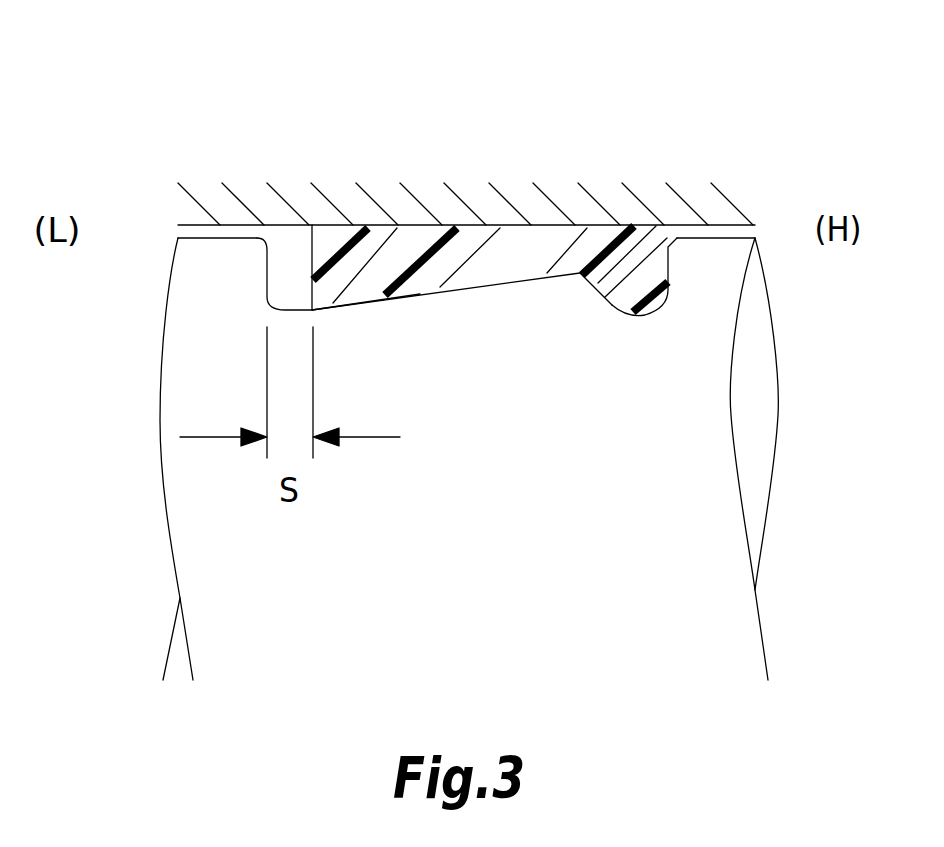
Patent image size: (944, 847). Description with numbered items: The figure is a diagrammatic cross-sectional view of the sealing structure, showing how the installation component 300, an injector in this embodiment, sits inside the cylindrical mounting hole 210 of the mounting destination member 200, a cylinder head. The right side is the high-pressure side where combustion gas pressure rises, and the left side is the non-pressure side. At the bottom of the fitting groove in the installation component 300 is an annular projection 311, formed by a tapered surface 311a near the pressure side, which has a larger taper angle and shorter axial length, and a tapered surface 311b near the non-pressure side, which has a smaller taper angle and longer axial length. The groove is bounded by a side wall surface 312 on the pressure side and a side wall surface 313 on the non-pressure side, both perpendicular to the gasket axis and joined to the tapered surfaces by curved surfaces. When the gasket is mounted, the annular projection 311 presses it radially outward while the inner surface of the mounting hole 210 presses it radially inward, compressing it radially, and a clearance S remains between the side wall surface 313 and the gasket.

The mounting destination member 200 is at (466, 175).
The mounting hole 210 is at (240, 226).
The installation component 300 is at (469, 459).
The annular projection 311 is at (527, 253).
The tapered surface 311a is at (603, 282).
The tapered surface 311b is at (412, 293).
The side wall surface 312 is at (665, 252).
The side wall surface 313 is at (268, 262).